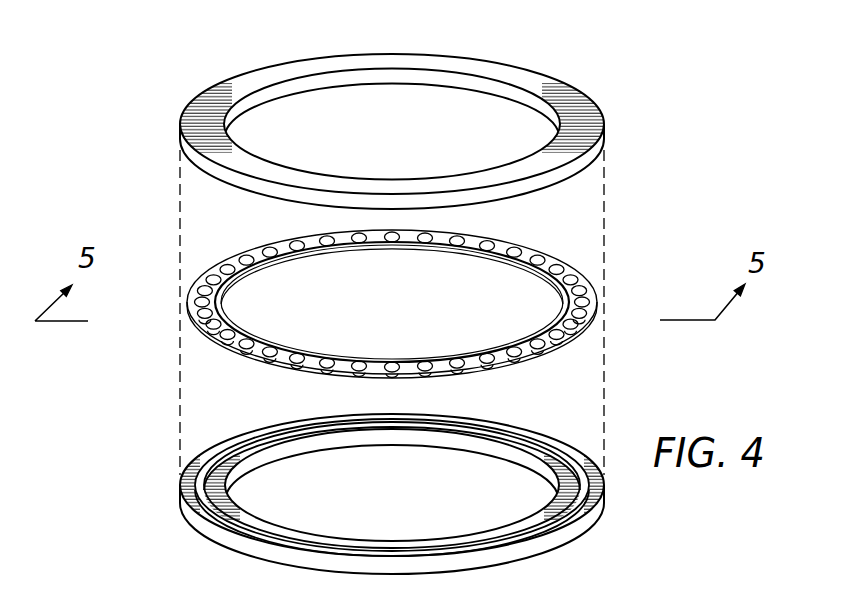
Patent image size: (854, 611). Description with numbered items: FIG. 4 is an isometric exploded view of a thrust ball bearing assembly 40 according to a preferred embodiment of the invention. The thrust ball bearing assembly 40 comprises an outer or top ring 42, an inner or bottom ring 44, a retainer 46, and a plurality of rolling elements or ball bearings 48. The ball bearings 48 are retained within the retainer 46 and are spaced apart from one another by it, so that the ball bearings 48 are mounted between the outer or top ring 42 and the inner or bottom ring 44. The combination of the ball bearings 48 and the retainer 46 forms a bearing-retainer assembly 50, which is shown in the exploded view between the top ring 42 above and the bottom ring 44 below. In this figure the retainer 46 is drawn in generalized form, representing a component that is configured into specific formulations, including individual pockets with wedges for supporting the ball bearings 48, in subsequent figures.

The thrust ball bearing assembly 40 is at (626, 116).
The outer or top ring 42 is at (520, 75).
The inner or bottom ring 44 is at (550, 538).
The retainer 46 is at (344, 245).
The ball bearings 48 is at (297, 243).
The bearing-retainer assembly 50 is at (430, 290).